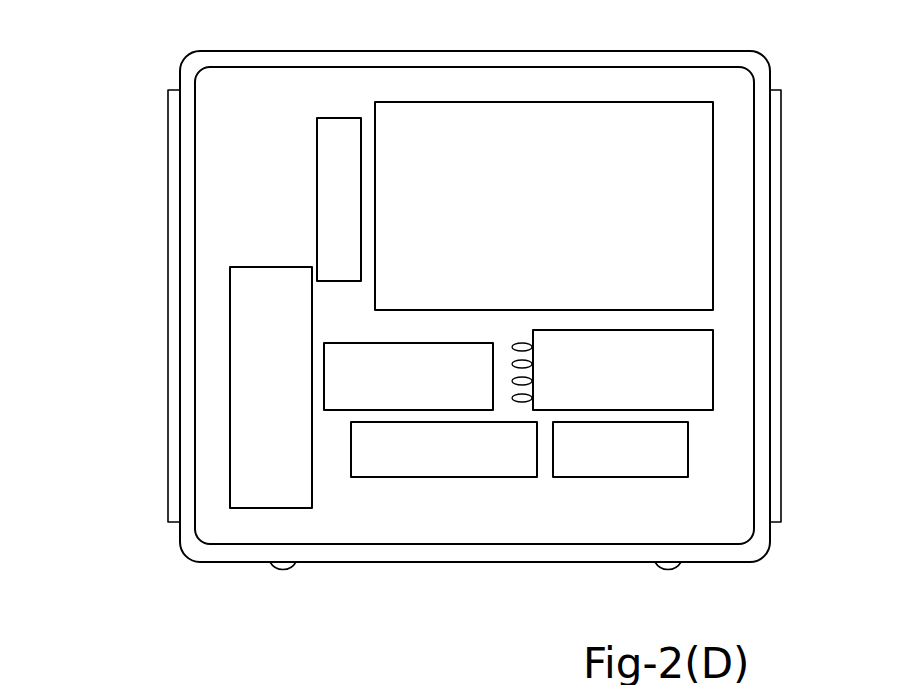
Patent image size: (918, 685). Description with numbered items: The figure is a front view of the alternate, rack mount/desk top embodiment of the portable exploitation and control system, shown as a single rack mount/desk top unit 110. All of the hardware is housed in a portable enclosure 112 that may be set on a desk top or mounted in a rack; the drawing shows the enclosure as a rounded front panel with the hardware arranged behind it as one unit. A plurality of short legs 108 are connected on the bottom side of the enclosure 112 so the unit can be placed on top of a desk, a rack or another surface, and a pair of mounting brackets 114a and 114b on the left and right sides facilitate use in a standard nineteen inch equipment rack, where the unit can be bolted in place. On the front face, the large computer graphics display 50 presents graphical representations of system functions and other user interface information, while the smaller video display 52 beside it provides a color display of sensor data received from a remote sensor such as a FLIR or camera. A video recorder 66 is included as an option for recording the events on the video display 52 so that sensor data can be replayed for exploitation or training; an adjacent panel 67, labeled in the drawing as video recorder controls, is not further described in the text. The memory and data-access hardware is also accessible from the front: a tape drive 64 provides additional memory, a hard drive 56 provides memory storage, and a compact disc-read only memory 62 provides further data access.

The rack mount/desk top unit 110 is at (118, 222).
The portable enclosure 112 is at (333, 57).
The mounting bracket 114a is at (176, 422).
The mounting bracket 114b is at (777, 498).
The short legs 108 is at (278, 570).
The computer graphics display 50 is at (675, 142).
The video display 52 is at (697, 367).
The hard drive 56 is at (372, 477).
The compact disc-read only memory (CD-ROM) 62 is at (613, 477).
The tape drive 64 is at (337, 117).
The video recorder 66 is at (345, 410).
The video recorder controls 67 is at (205, 537).